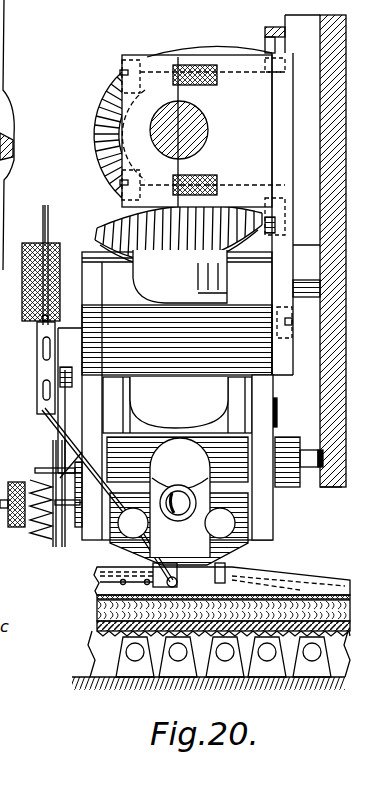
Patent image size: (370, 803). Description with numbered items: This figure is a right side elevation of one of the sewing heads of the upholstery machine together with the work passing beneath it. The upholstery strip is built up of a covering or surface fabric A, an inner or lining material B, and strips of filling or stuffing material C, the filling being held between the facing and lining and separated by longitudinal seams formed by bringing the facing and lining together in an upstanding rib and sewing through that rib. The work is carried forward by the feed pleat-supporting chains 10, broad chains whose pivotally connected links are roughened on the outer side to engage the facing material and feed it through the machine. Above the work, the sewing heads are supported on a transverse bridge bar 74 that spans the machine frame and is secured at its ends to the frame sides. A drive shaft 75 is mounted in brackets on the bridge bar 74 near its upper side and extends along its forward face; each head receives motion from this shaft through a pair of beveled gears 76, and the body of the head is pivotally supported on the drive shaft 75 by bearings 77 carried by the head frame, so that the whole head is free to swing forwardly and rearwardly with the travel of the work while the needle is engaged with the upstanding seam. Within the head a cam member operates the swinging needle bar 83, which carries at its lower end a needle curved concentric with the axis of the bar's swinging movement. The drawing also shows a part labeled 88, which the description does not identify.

The feed pleat-supporting chain 10 is at (133, 656).
The bridge bar 74 is at (333, 490).
The drive shaft 75 is at (208, 130).
The beveled gears 76 is at (98, 148).
The bearings 77 is at (148, 57).
The swinging needle bar 83 is at (236, 552).
The adjusting screw 88 is at (308, 456).
The covering or surface fabric A is at (107, 592).
The inner or lining material B is at (100, 626).
The filling or stuffing material strips C is at (105, 607).